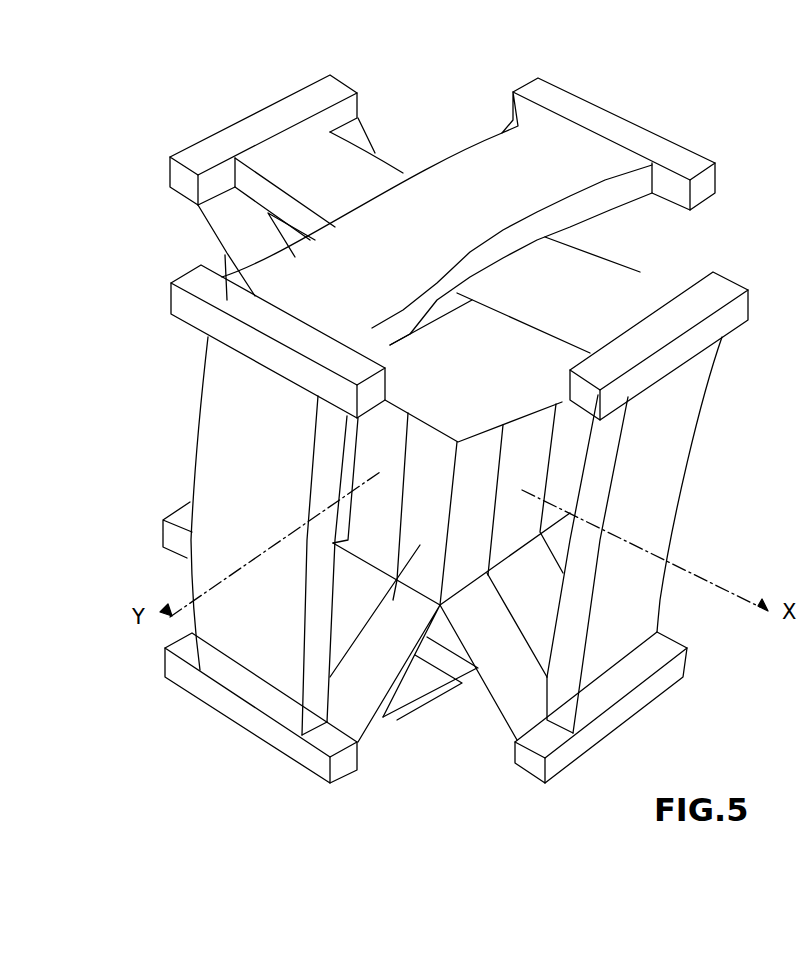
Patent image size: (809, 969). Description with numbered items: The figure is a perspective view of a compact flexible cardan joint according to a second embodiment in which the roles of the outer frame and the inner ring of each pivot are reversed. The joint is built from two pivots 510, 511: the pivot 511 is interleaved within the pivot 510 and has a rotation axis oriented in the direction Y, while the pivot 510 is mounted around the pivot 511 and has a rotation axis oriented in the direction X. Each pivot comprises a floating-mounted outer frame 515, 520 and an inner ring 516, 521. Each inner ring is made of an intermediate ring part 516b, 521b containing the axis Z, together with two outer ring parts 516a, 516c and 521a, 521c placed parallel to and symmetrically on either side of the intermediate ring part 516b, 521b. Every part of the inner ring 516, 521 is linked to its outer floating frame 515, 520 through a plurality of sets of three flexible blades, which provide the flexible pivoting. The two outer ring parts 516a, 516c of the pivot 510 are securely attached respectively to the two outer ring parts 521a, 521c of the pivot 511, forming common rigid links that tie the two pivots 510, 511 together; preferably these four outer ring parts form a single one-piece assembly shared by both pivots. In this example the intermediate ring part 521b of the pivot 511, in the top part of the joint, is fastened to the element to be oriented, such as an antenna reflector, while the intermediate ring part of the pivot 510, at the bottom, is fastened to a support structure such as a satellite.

The pivot 510 is at (732, 160).
The pivot 511 is at (344, 72).
The outer frame 515 is at (252, 385).
The inner ring 516 is at (400, 327).
The outer ring part 516a is at (393, 577).
The intermediate ring part 516b is at (377, 501).
The outer ring part 516c is at (350, 464).
The outer frame 520 is at (590, 287).
The inner ring 521 is at (508, 377).
The outer ring part 521a is at (473, 557).
The intermediate ring part 521b is at (530, 473).
The outer ring part 521c is at (570, 443).